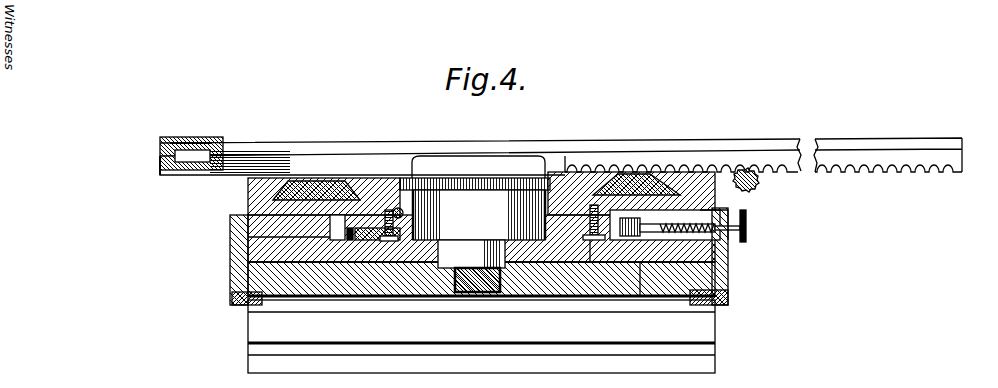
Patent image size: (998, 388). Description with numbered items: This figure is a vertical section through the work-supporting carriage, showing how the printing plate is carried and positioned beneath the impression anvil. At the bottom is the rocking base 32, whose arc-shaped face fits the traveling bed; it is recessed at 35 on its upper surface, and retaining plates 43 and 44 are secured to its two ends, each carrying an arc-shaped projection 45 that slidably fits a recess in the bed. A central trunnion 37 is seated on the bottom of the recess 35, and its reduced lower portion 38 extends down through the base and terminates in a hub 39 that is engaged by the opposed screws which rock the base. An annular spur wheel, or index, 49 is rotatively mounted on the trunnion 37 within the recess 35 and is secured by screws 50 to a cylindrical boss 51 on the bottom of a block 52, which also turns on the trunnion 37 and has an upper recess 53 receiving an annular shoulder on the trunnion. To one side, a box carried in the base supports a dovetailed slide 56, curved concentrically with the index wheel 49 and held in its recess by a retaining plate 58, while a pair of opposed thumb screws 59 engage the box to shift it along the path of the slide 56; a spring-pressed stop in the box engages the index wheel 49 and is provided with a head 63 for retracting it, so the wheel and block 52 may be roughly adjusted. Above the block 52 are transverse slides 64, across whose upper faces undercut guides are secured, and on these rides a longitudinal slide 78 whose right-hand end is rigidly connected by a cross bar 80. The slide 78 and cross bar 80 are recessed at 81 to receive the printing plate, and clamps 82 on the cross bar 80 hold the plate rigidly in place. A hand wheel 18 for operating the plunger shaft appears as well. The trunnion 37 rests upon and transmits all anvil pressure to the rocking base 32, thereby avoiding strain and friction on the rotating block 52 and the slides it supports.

The hand wheel 18 is at (755, 190).
The rocking base 32 is at (248, 237).
The recess 35 is at (248, 270).
The central trunnion 37 is at (475, 198).
The reduced lower portion 38 is at (432, 292).
The hub 39 is at (478, 292).
The retaining plate 43 is at (240, 288).
The retaining plate 44 is at (735, 258).
The arc-shaped projections 45 is at (245, 312).
The annular spur wheel 49 is at (608, 290).
The screws 50 is at (590, 262).
The cylindrical boss 51 is at (644, 290).
The block 52 is at (703, 172).
The upper recess 53 is at (410, 183).
The dovetailed slide 56 is at (722, 385).
The retaining plate 58 is at (854, 385).
The thumb screws 59 is at (782, 387).
The head 63 is at (750, 233).
The transverse slides 64 is at (645, 165).
The longitudinal slide 78 is at (256, 171).
The cross bar 80 is at (162, 166).
The recess 81 is at (248, 160).
The clamps 82 is at (216, 140).